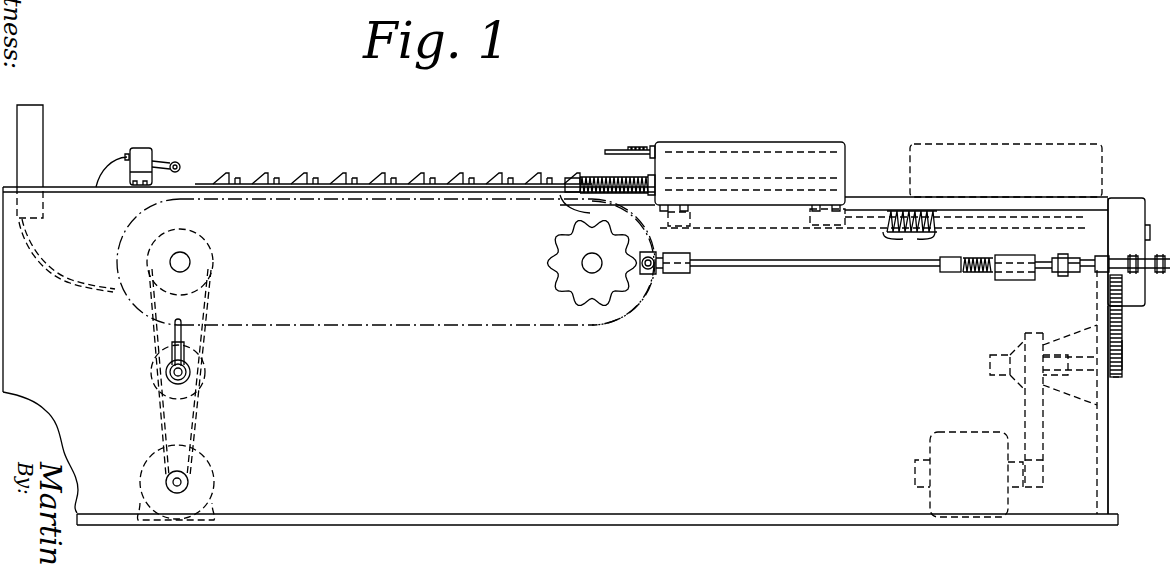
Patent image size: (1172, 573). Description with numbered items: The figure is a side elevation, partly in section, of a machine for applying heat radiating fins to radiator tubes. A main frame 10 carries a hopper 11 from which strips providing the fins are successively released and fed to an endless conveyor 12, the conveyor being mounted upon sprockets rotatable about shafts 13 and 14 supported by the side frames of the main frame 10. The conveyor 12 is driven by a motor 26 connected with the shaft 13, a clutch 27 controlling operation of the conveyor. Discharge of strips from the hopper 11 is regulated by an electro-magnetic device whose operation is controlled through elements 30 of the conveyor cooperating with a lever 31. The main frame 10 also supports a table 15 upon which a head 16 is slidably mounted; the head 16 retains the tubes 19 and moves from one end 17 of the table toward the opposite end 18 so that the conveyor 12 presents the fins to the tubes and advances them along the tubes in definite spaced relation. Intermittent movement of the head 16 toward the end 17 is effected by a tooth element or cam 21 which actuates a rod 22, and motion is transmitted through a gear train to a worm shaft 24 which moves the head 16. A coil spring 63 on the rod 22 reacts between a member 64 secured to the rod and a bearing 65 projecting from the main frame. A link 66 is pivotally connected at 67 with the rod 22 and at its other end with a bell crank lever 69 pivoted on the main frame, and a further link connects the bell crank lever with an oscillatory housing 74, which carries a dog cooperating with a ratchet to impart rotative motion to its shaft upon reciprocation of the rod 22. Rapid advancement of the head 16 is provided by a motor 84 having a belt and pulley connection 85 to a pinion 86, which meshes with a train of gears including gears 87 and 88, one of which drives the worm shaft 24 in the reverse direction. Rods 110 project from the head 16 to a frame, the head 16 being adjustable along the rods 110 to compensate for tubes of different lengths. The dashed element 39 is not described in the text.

The main frame 10 is at (560, 356).
The hopper 11 is at (36, 147).
The endless conveyor 12 is at (452, 181).
The shaft 13 is at (186, 266).
The shaft 14 is at (582, 265).
The table 15 is at (614, 190).
The head 16 is at (775, 150).
The end of the table 17 is at (1100, 206).
The opposite end of the table 18 is at (586, 203).
The tubes 19 is at (388, 172).
The tooth element or cam 21 is at (618, 305).
The rod 22 is at (805, 268).
The worm shaft 24 is at (903, 233).
The motor 26 is at (208, 472).
The clutch 27 is at (190, 370).
The elements of the conveyor 30 is at (178, 178).
The lever 31 is at (160, 162).
The conduit 39 is at (90, 288).
The coil spring 63 is at (978, 275).
The member 64 is at (962, 257).
The bearing 65 is at (1025, 260).
The link 66 is at (1086, 275).
The pivot connection 67 is at (1062, 275).
The bell crank lever 69 is at (1148, 272).
The oscillatory housing 74 is at (1145, 205).
The motor 84 is at (947, 436).
The belt and pulley connection 85 is at (1022, 407).
The pinion 86 is at (1116, 378).
The gear 87 is at (1122, 357).
The gear 88 is at (1122, 317).
The rods 110 is at (621, 150).